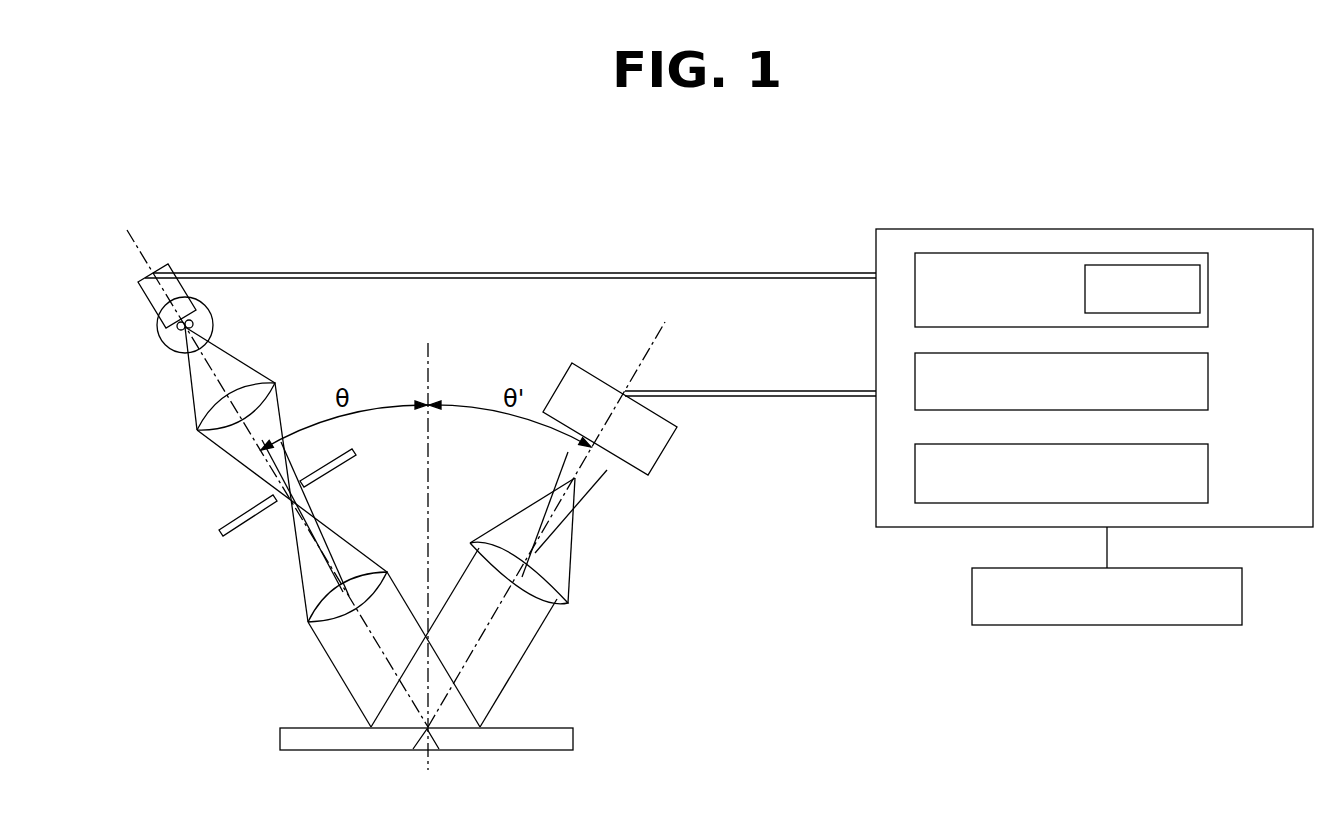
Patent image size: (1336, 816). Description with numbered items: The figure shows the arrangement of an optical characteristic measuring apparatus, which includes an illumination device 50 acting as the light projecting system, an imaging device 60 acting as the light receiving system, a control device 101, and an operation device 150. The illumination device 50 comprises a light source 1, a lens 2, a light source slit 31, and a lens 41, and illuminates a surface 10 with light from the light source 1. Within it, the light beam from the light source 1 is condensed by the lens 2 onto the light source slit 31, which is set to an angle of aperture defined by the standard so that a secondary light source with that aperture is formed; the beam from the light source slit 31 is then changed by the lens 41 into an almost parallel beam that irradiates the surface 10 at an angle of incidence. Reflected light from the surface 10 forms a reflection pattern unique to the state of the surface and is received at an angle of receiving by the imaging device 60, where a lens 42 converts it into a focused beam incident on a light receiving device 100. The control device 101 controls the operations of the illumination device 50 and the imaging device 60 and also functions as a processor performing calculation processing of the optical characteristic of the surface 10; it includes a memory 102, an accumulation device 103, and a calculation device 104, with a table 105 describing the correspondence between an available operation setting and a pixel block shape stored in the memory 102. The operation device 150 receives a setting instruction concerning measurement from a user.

The light source 1 is at (156, 313).
The lens 2 is at (197, 430).
The surface 10 is at (573, 739).
The light source slit 31 is at (221, 534).
The lens 41 is at (310, 625).
The lens 42 is at (568, 603).
The illumination device 50 is at (170, 393).
The imaging device 60 is at (646, 546).
The light receiving device 100 is at (660, 453).
The control device 101 is at (1243, 229).
The memory 102 is at (1208, 262).
The accumulation device 103 is at (1208, 372).
The calculation device 104 is at (1208, 465).
The table 105 is at (1200, 296).
The operation device 150 is at (1242, 590).